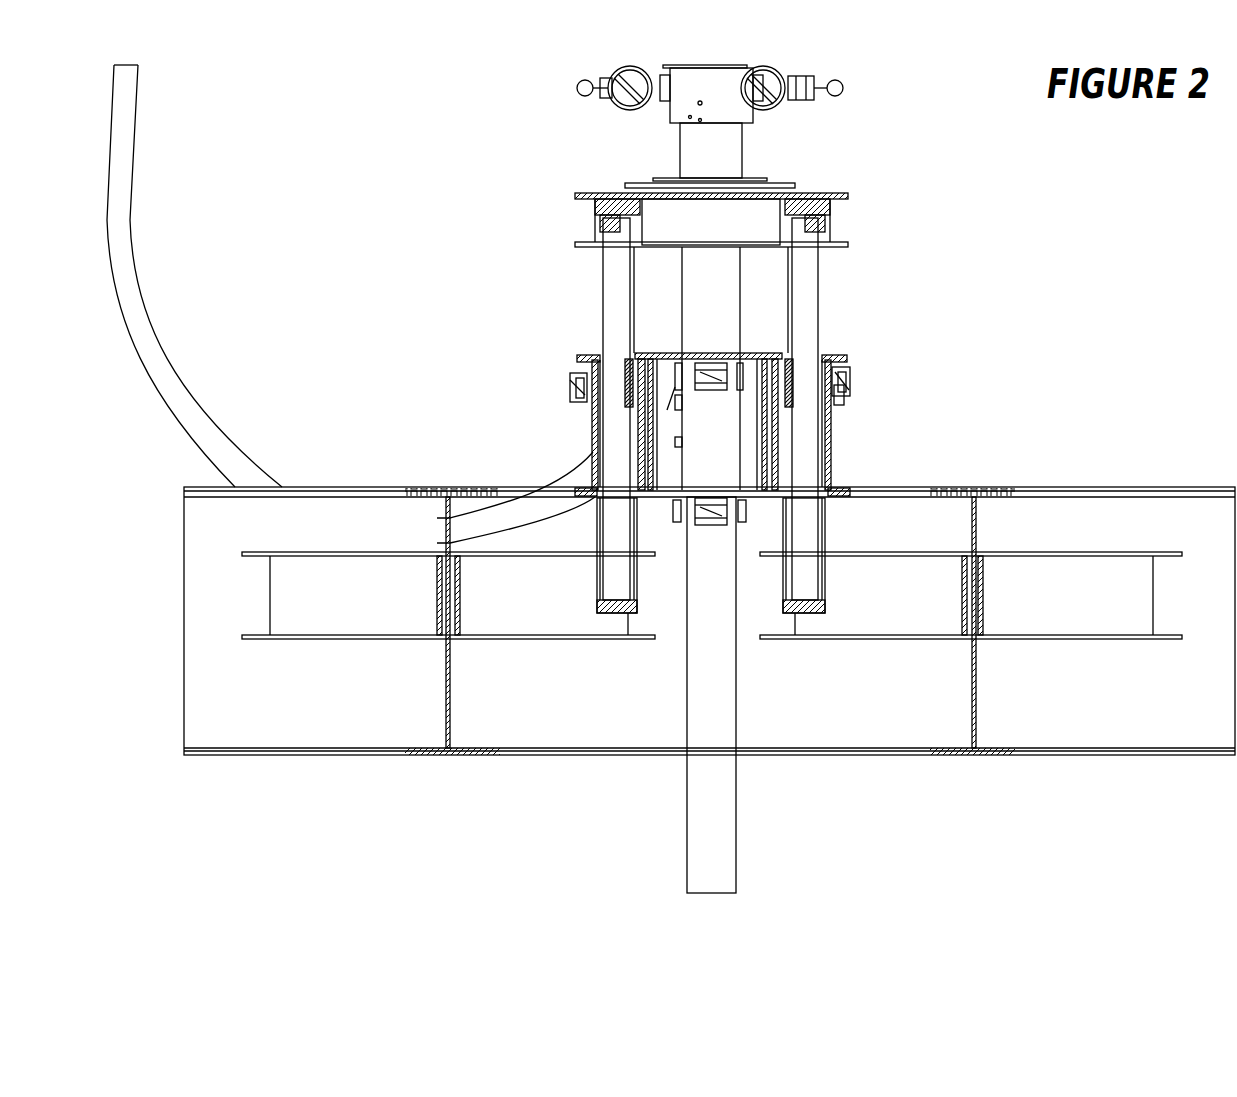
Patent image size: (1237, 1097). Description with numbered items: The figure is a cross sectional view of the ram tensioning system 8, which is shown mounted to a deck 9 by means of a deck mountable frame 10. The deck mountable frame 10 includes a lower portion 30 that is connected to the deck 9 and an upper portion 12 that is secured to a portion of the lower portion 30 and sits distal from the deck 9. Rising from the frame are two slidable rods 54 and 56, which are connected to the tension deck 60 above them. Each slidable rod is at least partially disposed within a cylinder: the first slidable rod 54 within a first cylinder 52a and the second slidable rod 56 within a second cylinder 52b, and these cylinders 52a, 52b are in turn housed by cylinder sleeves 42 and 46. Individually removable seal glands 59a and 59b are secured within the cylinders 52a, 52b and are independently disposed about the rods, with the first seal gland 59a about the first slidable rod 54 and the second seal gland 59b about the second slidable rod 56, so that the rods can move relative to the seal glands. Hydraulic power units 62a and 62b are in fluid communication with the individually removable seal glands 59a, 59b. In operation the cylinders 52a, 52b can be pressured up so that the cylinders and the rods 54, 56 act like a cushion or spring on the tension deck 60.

The ram tensioning system 8 is at (538, 172).
The deck 9 is at (375, 487).
The deck mountable frame 10 is at (528, 400).
The upper portion 12 is at (840, 352).
The lower portion 30 is at (840, 487).
The cylinder sleeve 42 is at (593, 445).
The cylinder sleeve 46 is at (832, 448).
The cylinder 52a is at (825, 595).
The cylinder 52b is at (600, 595).
The slidable rod 54 is at (820, 292).
The slidable rod 56 is at (603, 292).
The individually removable seal gland 59a is at (838, 392).
The individually removable seal gland 59b is at (580, 358).
The tension deck 60 is at (833, 196).
The hydraulic power unit 62a is at (852, 385).
The hydraulic power unit 62b is at (570, 385).